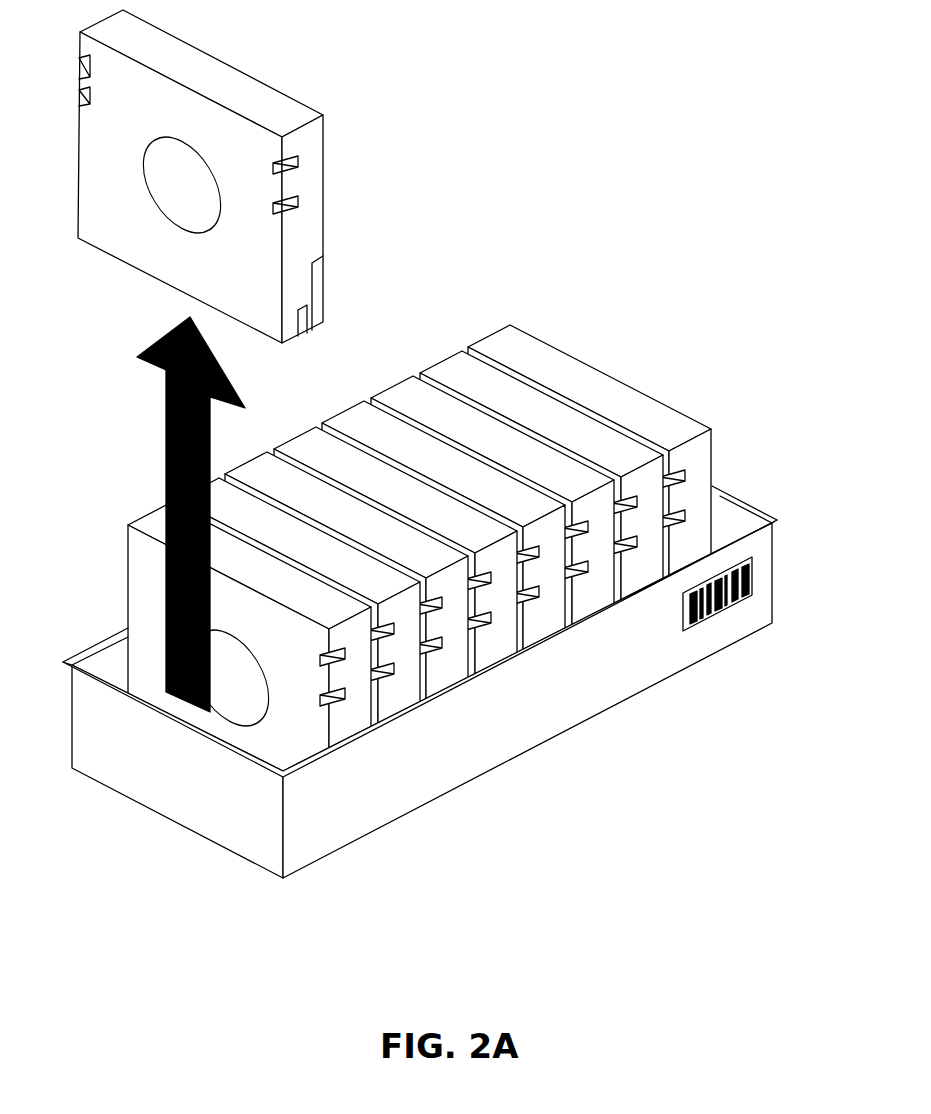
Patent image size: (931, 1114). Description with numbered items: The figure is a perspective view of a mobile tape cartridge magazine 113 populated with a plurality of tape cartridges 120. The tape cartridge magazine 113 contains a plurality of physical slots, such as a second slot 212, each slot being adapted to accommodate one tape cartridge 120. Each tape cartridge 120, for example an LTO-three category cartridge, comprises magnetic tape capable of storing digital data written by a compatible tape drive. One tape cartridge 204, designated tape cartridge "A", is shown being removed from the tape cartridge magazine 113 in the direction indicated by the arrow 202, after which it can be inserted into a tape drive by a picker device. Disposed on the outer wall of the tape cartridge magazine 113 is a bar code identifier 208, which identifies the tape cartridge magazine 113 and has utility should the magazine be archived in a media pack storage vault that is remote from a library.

The tape cartridge "A" 204 is at (328, 237).
The arrow 202 is at (166, 483).
The tape cartridges 120 is at (476, 337).
The second slot 212 is at (723, 508).
The bar code identifier 208 is at (697, 652).
The tape cartridge magazine 113 is at (576, 735).